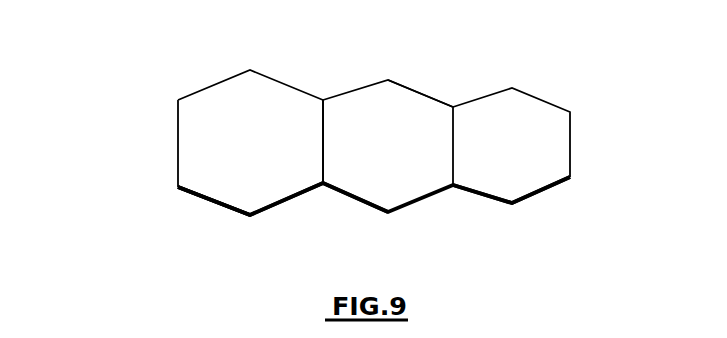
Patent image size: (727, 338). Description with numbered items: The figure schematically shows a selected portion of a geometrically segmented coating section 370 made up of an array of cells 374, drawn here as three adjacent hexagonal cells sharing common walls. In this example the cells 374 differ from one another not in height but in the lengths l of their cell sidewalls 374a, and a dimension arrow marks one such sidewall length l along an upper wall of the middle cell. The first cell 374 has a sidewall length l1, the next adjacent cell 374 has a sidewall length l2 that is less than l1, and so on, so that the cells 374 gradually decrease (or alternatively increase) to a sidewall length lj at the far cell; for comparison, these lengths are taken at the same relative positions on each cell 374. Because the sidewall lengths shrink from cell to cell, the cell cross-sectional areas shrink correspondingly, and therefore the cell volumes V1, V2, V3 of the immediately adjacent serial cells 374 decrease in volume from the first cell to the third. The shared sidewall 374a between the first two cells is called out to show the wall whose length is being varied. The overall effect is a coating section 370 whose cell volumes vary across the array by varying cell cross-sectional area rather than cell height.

The geometrically segmented coating section 370 is at (143, 222).
The cells 374 is at (257, 185).
The cell sidewalls 374a is at (325, 137).
The cell volume V1 is at (222, 120).
The cell volume V2 is at (405, 162).
The cell volume V3 is at (535, 153).
The sidewall length l1 is at (213, 203).
The sidewall length l2 is at (353, 197).
The sidewall length lj is at (511, 214).
The sidewall length l is at (397, 65).